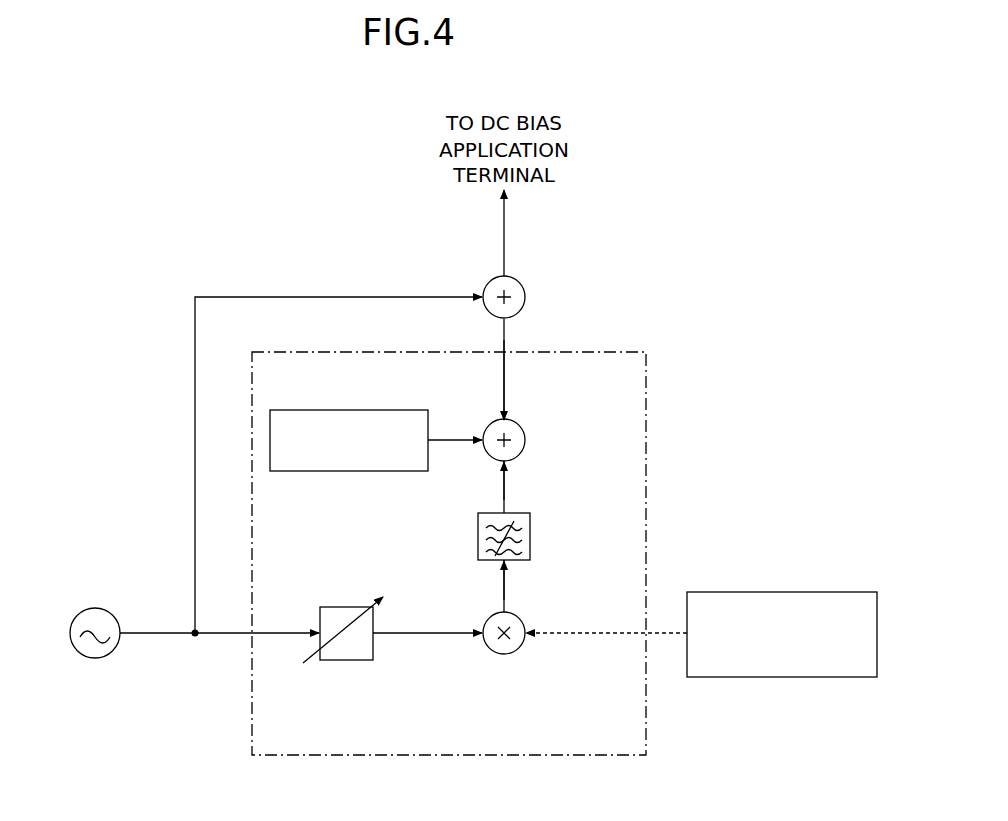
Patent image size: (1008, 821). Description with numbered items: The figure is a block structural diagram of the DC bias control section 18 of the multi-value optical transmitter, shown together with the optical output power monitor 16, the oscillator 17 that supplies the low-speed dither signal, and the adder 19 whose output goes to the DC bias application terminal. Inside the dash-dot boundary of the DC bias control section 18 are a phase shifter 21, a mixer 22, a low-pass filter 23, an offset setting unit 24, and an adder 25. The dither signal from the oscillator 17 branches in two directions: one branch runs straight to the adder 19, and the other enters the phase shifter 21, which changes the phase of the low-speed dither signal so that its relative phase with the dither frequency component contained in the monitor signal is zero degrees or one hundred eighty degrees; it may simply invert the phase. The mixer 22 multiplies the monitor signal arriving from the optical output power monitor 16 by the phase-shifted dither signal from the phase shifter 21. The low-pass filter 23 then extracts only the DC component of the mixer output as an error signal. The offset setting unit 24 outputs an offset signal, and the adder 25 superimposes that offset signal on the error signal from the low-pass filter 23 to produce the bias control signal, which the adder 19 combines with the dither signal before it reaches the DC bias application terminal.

The optical output power monitor 16 is at (813, 592).
The oscillator 17 is at (97, 657).
The DC bias control section 18 is at (650, 408).
The adder 19 is at (524, 285).
The phase shifter 21 is at (327, 607).
The mixer 22 is at (519, 648).
The low-pass filter 23 is at (530, 527).
The offset setting unit 24 is at (358, 410).
The adder 25 is at (521, 428).